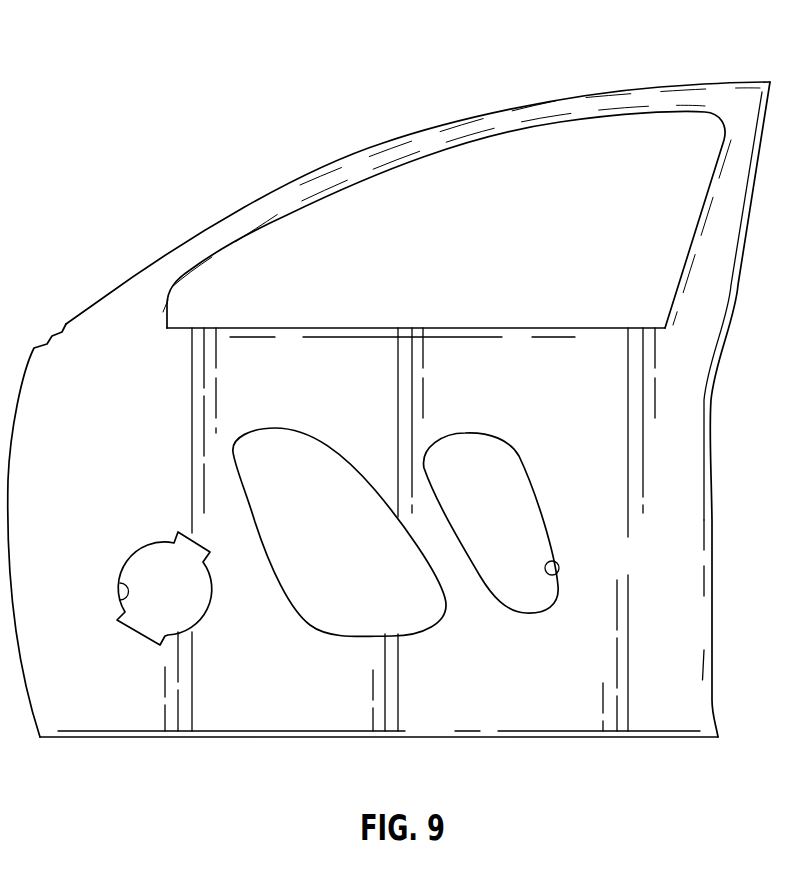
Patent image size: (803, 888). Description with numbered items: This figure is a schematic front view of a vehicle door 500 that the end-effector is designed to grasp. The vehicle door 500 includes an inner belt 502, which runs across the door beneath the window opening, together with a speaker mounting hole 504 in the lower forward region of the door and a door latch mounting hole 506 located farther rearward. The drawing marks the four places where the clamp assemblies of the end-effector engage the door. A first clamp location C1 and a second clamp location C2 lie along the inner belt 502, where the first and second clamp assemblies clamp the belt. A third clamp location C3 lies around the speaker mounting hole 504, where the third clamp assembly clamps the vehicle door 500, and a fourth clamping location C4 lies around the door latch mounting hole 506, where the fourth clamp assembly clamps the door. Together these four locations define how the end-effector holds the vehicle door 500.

The vehicle door 500 is at (102, 60).
The inner belt 502 is at (435, 328).
The speaker mounting hole 504 is at (120, 598).
The door latch mounting hole 506 is at (559, 572).
The first clamp location C1 is at (250, 328).
The second clamp location C2 is at (605, 328).
The third clamp location C3 is at (207, 612).
The fourth clamping location C4 is at (542, 497).